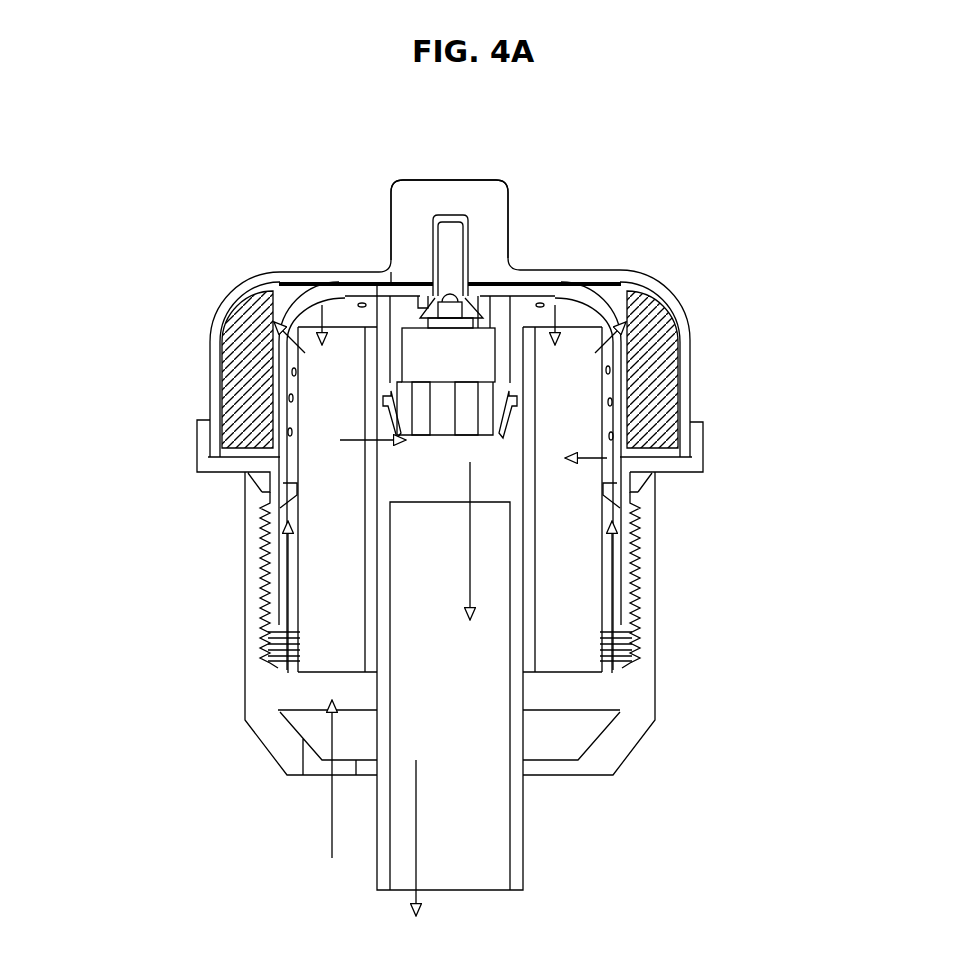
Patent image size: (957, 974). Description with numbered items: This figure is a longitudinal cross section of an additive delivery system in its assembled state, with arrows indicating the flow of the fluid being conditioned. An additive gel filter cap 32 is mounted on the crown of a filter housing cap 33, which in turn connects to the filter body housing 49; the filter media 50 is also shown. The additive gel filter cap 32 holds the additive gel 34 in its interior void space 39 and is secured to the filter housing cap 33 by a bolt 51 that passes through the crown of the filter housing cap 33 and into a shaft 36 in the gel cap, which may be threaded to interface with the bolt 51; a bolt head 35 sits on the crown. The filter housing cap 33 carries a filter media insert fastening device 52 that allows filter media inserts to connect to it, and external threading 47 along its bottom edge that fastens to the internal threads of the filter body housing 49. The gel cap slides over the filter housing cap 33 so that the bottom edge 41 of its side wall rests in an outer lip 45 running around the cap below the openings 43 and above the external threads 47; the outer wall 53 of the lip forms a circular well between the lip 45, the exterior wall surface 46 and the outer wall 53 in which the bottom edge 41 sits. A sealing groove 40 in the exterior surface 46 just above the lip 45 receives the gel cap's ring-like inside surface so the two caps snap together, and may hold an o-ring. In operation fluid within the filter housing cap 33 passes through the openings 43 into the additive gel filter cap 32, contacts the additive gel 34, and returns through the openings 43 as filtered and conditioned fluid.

The additive gel filter cap 32 is at (690, 300).
The filter housing cap 33 is at (180, 466).
The additive gel 34 is at (250, 378).
The bolt head 35 is at (448, 192).
The shaft 36 is at (450, 237).
The interior void space 39 is at (606, 296).
The sealing groove 40 is at (262, 437).
The bottom edge 41 is at (643, 439).
The openings 43 is at (353, 322).
The outer lip 45 is at (682, 478).
The exterior wall surface 46 is at (634, 372).
The external threading 47 is at (268, 632).
The filter body housing 49 is at (667, 710).
The filter media 50 is at (318, 615).
The bolt 51 is at (455, 280).
The filter media insert fastening device 52 is at (425, 356).
The outer wall 53 is at (711, 436).